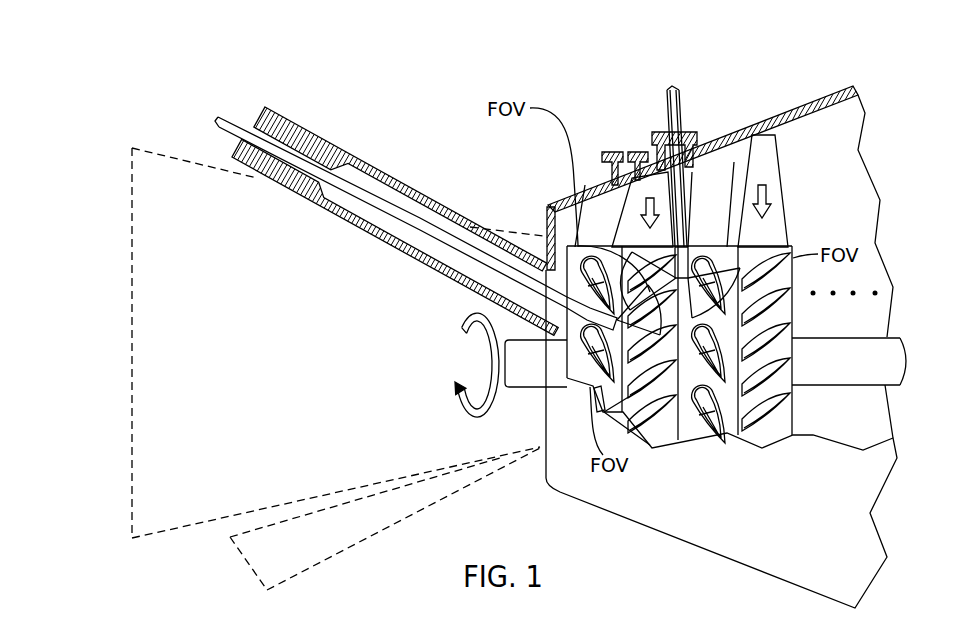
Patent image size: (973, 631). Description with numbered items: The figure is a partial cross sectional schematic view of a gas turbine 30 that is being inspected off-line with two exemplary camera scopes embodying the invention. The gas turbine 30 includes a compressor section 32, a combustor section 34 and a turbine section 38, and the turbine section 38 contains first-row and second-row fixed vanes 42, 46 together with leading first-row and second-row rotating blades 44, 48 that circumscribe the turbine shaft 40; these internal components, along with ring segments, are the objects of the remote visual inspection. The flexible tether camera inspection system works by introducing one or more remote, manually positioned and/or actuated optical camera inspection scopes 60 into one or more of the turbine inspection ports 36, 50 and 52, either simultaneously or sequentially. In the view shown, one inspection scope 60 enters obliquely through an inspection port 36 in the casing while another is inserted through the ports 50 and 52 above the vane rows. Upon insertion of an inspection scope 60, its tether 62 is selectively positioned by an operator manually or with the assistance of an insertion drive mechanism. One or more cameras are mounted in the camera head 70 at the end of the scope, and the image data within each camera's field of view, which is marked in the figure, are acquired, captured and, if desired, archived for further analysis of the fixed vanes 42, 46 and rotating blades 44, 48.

The gas turbine 30 is at (166, 76).
The compressor section 32 is at (195, 355).
The combustor section 34 is at (368, 162).
The turbine inspection port 36 is at (251, 126).
The turbine section 38 is at (751, 545).
The turbine shaft 40 is at (893, 350).
The Row 1 fixed vanes 42 is at (575, 384).
The Row 1 rotating blades 44 is at (667, 412).
The Row 2 fixed vanes 46 is at (728, 423).
The Row 2 rotating blades 48 is at (793, 408).
The turbine inspection port 50 is at (611, 152).
The turbine inspection port 52 is at (662, 132).
The optical camera inspection scope 60 is at (441, 222).
The tether 62 is at (466, 248).
The camera head 70 is at (547, 207).